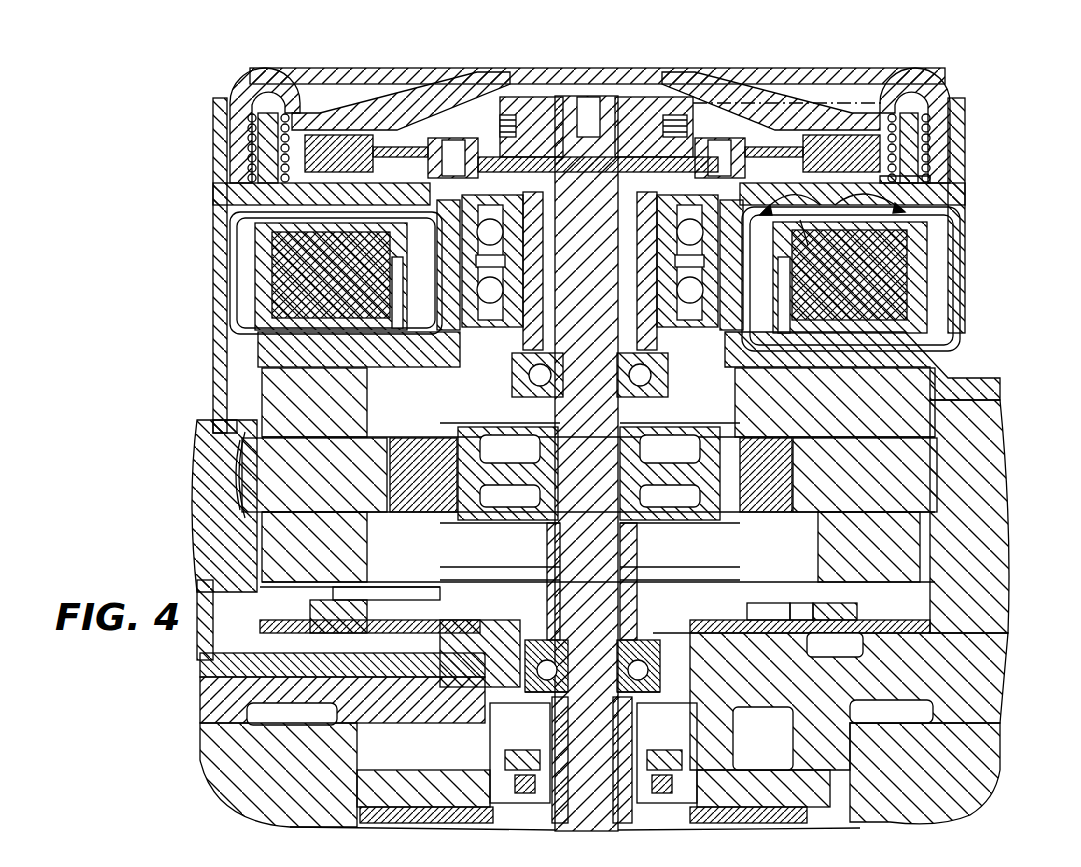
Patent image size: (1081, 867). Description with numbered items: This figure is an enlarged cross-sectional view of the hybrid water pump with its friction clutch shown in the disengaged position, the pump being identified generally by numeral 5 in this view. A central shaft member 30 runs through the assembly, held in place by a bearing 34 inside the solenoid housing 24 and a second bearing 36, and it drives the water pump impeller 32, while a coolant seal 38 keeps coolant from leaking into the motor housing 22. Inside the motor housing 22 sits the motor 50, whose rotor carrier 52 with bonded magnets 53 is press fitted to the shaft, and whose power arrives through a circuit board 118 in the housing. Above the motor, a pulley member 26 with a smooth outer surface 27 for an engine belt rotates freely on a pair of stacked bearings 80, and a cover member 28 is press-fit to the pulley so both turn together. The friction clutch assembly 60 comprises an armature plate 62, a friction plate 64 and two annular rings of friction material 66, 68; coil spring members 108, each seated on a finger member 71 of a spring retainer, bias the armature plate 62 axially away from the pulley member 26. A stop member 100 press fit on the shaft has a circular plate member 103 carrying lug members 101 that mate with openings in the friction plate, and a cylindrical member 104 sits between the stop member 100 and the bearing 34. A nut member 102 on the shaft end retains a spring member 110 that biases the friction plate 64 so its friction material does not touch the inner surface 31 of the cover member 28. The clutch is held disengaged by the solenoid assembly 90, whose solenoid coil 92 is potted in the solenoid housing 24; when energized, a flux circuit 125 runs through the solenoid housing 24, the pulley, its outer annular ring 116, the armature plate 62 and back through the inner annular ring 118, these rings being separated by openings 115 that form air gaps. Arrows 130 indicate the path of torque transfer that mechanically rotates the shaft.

The electric motor assembly 5 is at (803, 108).
The motor housing 22 is at (207, 660).
The solenoid housing 24 is at (258, 352).
The pulley member 26 is at (230, 232).
The smooth outer surface 27 is at (238, 182).
The cover member 28 is at (270, 92).
The central shaft member 30 is at (583, 95).
The inner surface 31 is at (795, 118).
The water pump impeller 32 is at (815, 815).
The bearing 34 is at (590, 523).
The bearing 36 is at (655, 670).
The coolant seal 38 is at (665, 692).
The motor 50 is at (232, 505).
The rotor carrier 52 is at (728, 432).
The magnets 53 is at (790, 468).
The friction clutch assembly 60 is at (232, 265).
The armature plate 62 is at (895, 182).
The friction plate 64 is at (332, 156).
The friction material 66 is at (352, 140).
The friction material 68 is at (317, 152).
The finger member 71 is at (912, 140).
The bearings 80 is at (562, 335).
The solenoid assembly 90 is at (250, 291).
The solenoid coil 92 is at (325, 312).
The stop member 100 is at (540, 172).
The lug members 101 is at (442, 140).
The nut member 102 is at (648, 100).
The circular plate member 103 is at (550, 240).
The cylindrical member 104 is at (555, 376).
The coil spring members 108 is at (930, 157).
The spring member 110 is at (678, 115).
The openings 115 is at (832, 208).
The outer annular ring 116 is at (878, 213).
The inner annular ring 118 is at (1012, 705).
The flux circuit 125 is at (958, 243).
The arrows 130 is at (882, 93).